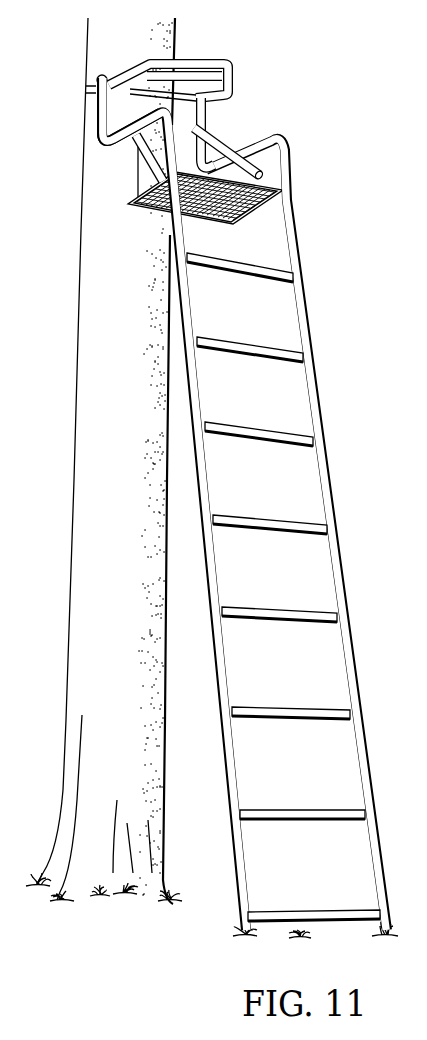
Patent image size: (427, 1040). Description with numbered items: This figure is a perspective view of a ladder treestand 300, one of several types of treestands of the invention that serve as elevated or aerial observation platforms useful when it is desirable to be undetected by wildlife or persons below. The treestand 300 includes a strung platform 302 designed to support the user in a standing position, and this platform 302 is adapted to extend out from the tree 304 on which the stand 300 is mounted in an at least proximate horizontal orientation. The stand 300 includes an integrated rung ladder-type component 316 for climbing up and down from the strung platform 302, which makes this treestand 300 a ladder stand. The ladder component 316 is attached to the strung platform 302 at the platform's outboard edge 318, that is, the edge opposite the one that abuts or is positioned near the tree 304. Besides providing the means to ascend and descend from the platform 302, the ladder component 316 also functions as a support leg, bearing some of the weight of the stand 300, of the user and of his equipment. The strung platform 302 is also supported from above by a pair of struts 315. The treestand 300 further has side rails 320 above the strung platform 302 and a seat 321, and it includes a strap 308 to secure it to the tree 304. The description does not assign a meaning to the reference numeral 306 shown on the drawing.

The treestand 300 is at (265, 69).
The strung platform 302 is at (247, 504).
The tree 304 is at (93, 212).
The securing strap 306 is at (6, 166).
The strap 308 is at (90, 98).
The struts 315 is at (220, 137).
The ladder component 316 is at (294, 250).
The outboard edge 318 is at (262, 218).
The side rails 320 is at (258, 137).
The seat 321 is at (200, 63).